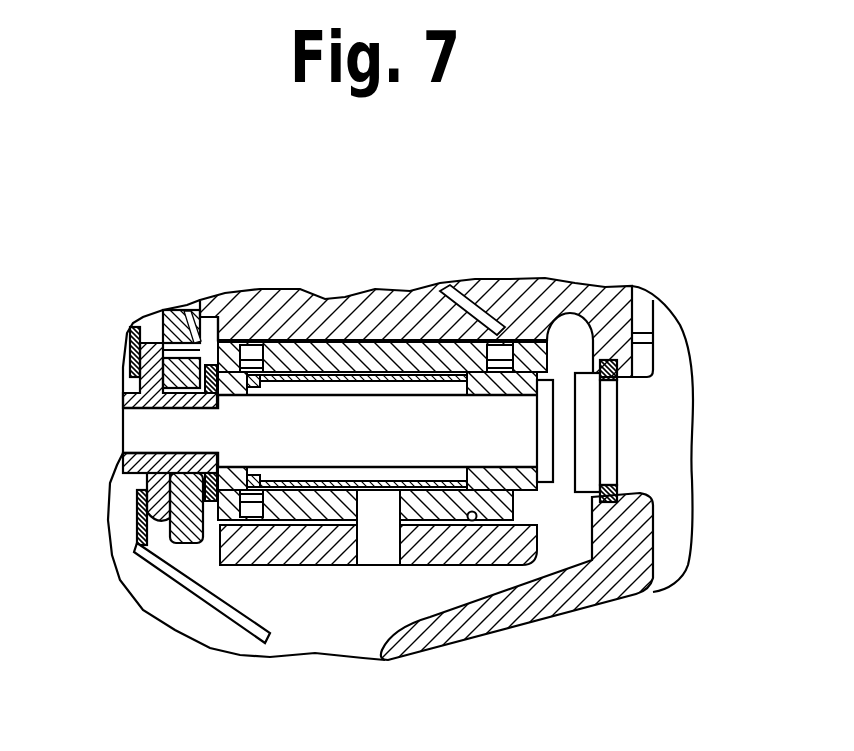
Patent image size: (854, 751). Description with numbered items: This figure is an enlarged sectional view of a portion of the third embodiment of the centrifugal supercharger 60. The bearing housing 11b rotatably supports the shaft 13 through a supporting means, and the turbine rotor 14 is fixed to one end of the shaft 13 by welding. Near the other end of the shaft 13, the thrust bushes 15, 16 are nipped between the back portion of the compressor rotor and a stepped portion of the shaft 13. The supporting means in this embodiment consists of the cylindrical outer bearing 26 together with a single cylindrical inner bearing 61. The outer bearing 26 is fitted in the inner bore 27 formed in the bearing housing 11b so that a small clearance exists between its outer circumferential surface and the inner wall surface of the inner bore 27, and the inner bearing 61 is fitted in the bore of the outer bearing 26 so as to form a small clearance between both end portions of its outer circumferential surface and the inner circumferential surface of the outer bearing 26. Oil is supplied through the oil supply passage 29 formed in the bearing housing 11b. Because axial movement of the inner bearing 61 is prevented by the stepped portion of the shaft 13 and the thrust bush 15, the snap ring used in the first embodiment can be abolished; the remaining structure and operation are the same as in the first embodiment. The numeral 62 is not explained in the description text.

The bearing housing 11b is at (357, 315).
The shaft 13 is at (363, 443).
The turbine rotor 14 is at (678, 452).
The thrust bush 15 is at (206, 503).
The thrust bush 16 is at (123, 462).
The cylindrical outer bearing 26 is at (540, 525).
The inner bore 27 is at (472, 522).
The oil supply passage 29 is at (270, 308).
The centrifugal supercharger 60 is at (174, 296).
The single cylindrical inner bearing 61 is at (523, 342).
The drain passage 62 is at (383, 493).